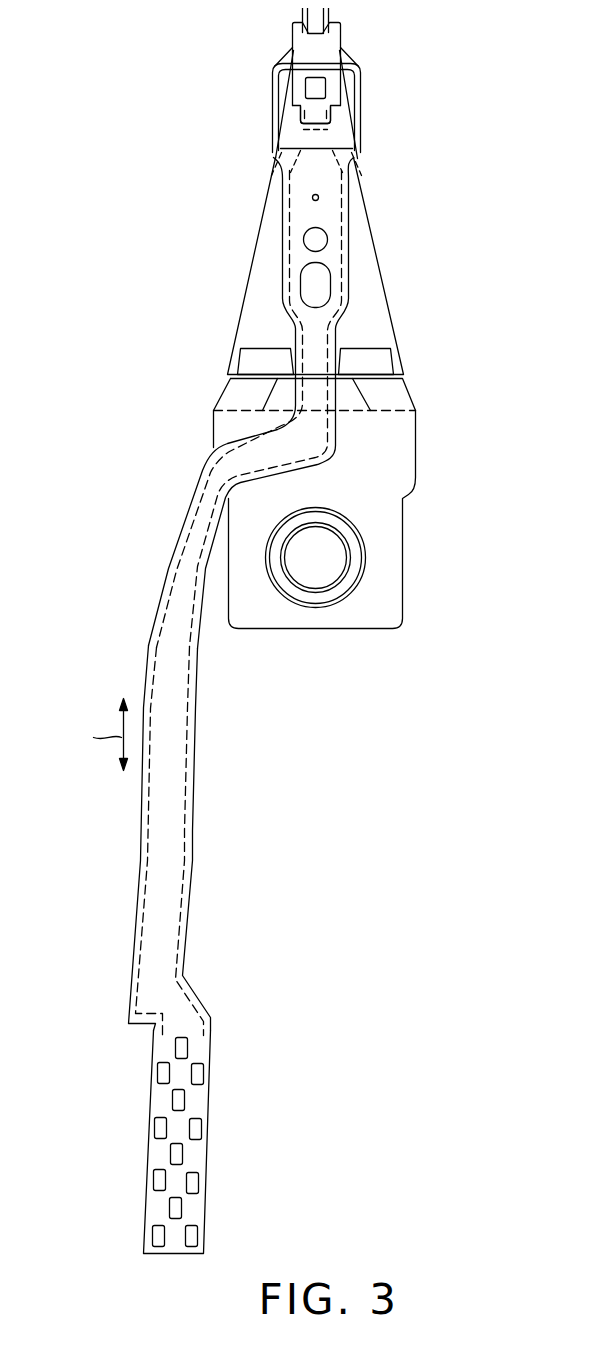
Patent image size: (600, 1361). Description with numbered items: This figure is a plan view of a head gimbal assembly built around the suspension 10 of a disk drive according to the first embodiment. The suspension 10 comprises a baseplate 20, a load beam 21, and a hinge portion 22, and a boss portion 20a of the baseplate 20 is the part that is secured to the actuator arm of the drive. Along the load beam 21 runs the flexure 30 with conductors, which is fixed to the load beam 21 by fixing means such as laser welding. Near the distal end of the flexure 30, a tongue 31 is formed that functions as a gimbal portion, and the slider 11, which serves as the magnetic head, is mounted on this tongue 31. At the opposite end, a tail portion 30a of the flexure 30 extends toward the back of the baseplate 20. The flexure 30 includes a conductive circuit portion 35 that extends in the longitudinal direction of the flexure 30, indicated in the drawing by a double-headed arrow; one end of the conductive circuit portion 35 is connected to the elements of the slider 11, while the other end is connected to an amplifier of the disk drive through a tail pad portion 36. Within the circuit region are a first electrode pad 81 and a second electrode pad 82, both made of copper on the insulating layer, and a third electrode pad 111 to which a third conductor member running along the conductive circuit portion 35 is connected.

The suspension 10 is at (261, 631).
The slider 11 is at (318, 89).
The tongue 31 is at (317, 115).
The load beam 21 is at (367, 305).
The hinge portion 22 is at (393, 393).
The baseplate 20 is at (354, 520).
The boss portion 20a is at (352, 572).
The flexure 30 is at (340, 228).
The conductive circuit portion 35 is at (173, 753).
The tail portion 30a is at (140, 829).
The tail pad portion 36 is at (169, 1142).
The first electrode pad 81 is at (188, 1047).
The second electrode pad 82 is at (203, 1075).
The third electrode pad 111 is at (185, 1100).